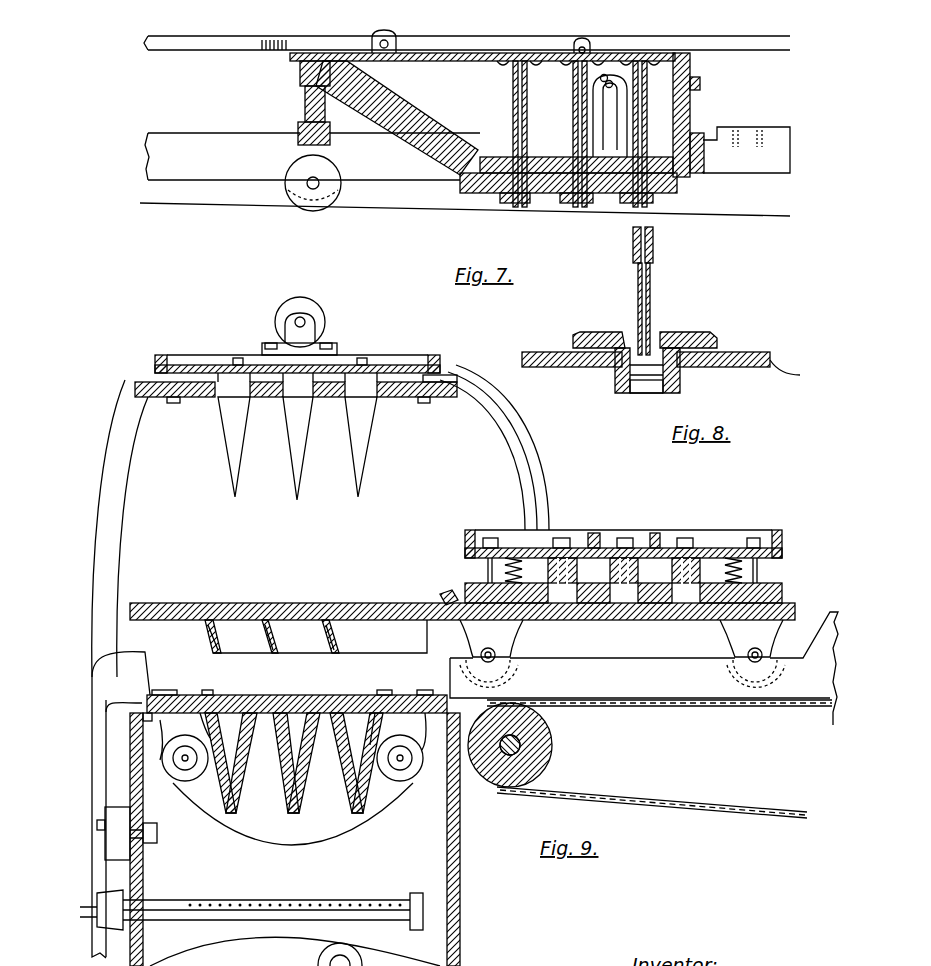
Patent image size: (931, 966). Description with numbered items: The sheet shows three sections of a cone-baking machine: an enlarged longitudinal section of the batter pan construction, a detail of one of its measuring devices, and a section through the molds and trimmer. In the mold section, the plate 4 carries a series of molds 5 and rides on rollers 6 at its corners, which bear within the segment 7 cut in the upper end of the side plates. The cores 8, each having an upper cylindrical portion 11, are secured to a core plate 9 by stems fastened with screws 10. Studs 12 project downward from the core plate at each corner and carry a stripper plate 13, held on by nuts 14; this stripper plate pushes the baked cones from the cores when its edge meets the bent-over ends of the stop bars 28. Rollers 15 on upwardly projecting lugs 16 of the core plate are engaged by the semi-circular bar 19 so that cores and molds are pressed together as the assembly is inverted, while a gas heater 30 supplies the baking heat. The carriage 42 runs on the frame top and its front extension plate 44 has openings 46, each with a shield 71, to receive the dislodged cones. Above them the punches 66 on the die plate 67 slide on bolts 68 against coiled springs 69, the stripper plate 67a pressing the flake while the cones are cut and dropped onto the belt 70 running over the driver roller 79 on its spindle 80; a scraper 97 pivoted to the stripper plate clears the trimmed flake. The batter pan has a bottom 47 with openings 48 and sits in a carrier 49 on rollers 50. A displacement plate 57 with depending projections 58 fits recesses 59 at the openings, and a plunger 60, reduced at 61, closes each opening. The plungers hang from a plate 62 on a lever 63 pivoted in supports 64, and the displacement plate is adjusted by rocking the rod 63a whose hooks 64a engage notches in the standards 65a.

In FIG. 9, the plate 4 is at (180, 695).
In FIG. 9, the molds 5 is at (215, 790).
In FIG. 9, the rollers 6 is at (172, 780).
In FIG. 9, the segment 7 is at (262, 840).
In FIG. 9, the cores 8 is at (240, 442).
In FIG. 9, the core plate 9 is at (200, 365).
In FIG. 9, the screws 10 is at (238, 358).
In FIG. 9, the cylindrical portion 11 is at (228, 385).
In FIG. 9, the studs 12 is at (438, 380).
In FIG. 9, the stripper plate 13 is at (395, 398).
In FIG. 9, the nuts 14 is at (175, 403).
In FIG. 9, the rollers 15 is at (318, 312).
In FIG. 9, the lugs 16 is at (290, 320).
In FIG. 9, the semi-circular bar 19 is at (505, 462).
In FIG. 9, the stop bars 28 is at (110, 540).
In FIG. 9, the gas heater 30 is at (338, 900).
In FIG. 9, the carriage 42 is at (600, 628).
In FIG. 9, the front extension plate 44 is at (393, 603).
In FIG. 9, the openings 46 is at (240, 603).
In FIG. 7, the bottom 47 is at (552, 195).
In FIG. 8, the bottom 47 is at (797, 373).
In FIG. 7, the openings 48 is at (498, 200).
In FIG. 8, the openings 48 is at (652, 390).
In FIG. 7, the carrier 49 is at (215, 182).
In FIG. 7, the rollers 50 is at (317, 205).
In FIG. 7, the displacement plate 57 is at (551, 156).
In FIG. 8, the displacement plate 57 is at (720, 350).
In FIG. 8, the depending projections 58 is at (617, 330).
In FIG. 8, the recesses 59 is at (614, 375).
In FIG. 7, the plunger 60 is at (563, 134).
In FIG. 8, the plunger 60 is at (653, 252).
In FIG. 7, the reduced portion 61 is at (665, 138).
In FIG. 8, the reduced portion 61 is at (651, 310).
In FIG. 7, the plate 62 is at (606, 75).
In FIG. 7, the lever 63 is at (510, 50).
In FIG. 7, the rod 63a is at (610, 75).
In FIG. 7, the supports 64 is at (396, 35).
In FIG. 7, the hooks 64a is at (593, 30).
In FIG. 7, the standards 65a is at (612, 122).
In FIG. 9, the punches 66 is at (556, 568).
In FIG. 9, the die plate 67 is at (592, 532).
In FIG. 9, the stripper plate 67a is at (782, 590).
In FIG. 9, the bolts 68 is at (488, 568).
In FIG. 9, the coiled springs 69 is at (510, 560).
In FIG. 9, the belt 70 is at (668, 706).
In FIG. 9, the shield 71 is at (205, 635).
In FIG. 9, the driver roller 79 is at (552, 745).
In FIG. 9, the spindle 80 is at (520, 740).
In FIG. 9, the scraper 97 is at (446, 592).